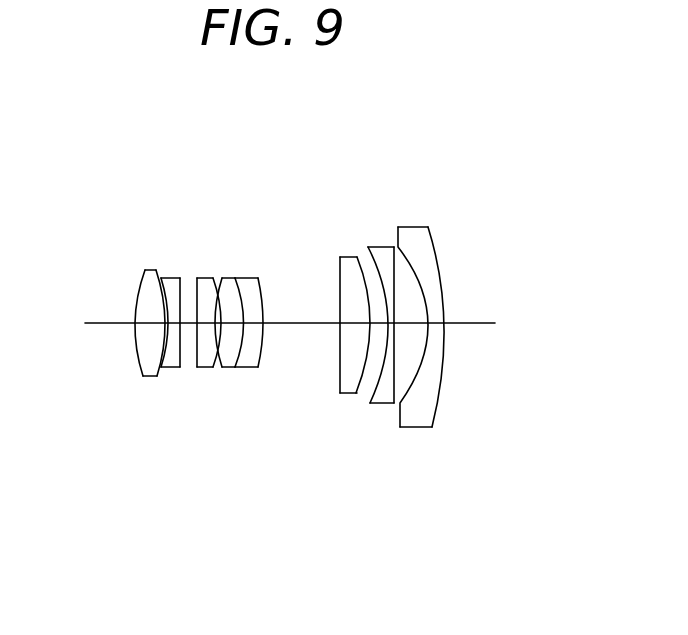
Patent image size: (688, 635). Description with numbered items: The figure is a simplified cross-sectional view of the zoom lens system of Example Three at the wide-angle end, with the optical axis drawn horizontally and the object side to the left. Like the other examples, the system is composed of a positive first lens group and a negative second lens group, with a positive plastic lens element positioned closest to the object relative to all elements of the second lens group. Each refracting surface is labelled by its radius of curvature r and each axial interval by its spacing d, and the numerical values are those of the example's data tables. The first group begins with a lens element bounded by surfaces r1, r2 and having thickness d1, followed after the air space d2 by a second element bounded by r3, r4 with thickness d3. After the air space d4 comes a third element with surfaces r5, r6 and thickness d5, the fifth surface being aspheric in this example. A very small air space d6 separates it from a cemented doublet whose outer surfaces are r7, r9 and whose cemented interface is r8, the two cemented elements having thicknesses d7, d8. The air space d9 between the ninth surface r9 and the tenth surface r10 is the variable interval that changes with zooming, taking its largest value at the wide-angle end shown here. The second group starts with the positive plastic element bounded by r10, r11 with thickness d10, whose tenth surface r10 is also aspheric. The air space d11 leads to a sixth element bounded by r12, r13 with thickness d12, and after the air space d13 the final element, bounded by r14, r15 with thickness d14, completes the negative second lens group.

The radius of curvature of the first lens surface r1 is at (145, 270).
The radius of curvature of the second lens surface r2 is at (155, 270).
The radius of curvature of the third lens surface r3 is at (161, 278).
The radius of curvature of the fourth lens surface r4 is at (180, 278).
The radius of curvature of the fifth lens surface r5 is at (197, 278).
The radius of curvature of the sixth lens surface r6 is at (213, 278).
The radius of curvature of the seventh lens surface r7 is at (222, 278).
The radius of curvature of the eighth lens surface r8 is at (236, 278).
The radius of curvature of the ninth lens surface r9 is at (256, 278).
The radius of curvature of the tenth lens surface r10 is at (340, 257).
The radius of curvature of the eleventh lens surface r11 is at (355, 257).
The radius of curvature of the twelfth lens surface r12 is at (369, 247).
The radius of curvature of the thirteenth lens surface r13 is at (398, 247).
The radius of curvature of the fourteenth lens surface r14 is at (399, 227).
The radius of curvature of the fifteenth lens surface r15 is at (428, 227).
The axial thickness of the first lens element d1 is at (141, 376).
The air space between the second and third surfaces d2 is at (156, 376).
The axial thickness of the second lens element d3 is at (168, 367).
The air space between the fourth and fifth surfaces d4 is at (188, 367).
The axial thickness of the third lens element d5 is at (208, 367).
The air space between the sixth and seventh surfaces d6 is at (223, 367).
The axial thickness of the first element of the cemented doublet d7 is at (243, 367).
The axial thickness of the second element of the cemented doublet d8 is at (262, 367).
The variable air space between the first and second lens groups d9 is at (302, 323).
The axial thickness of the positive plastic lens element d10 is at (350, 393).
The air space between the eleventh and twelfth surfaces d11 is at (373, 403).
The axial thickness of the sixth lens element d12 is at (396, 403).
The air space between the thirteenth and fourteenth surfaces d13 is at (417, 427).
The axial thickness of the seventh lens element d14 is at (442, 380).